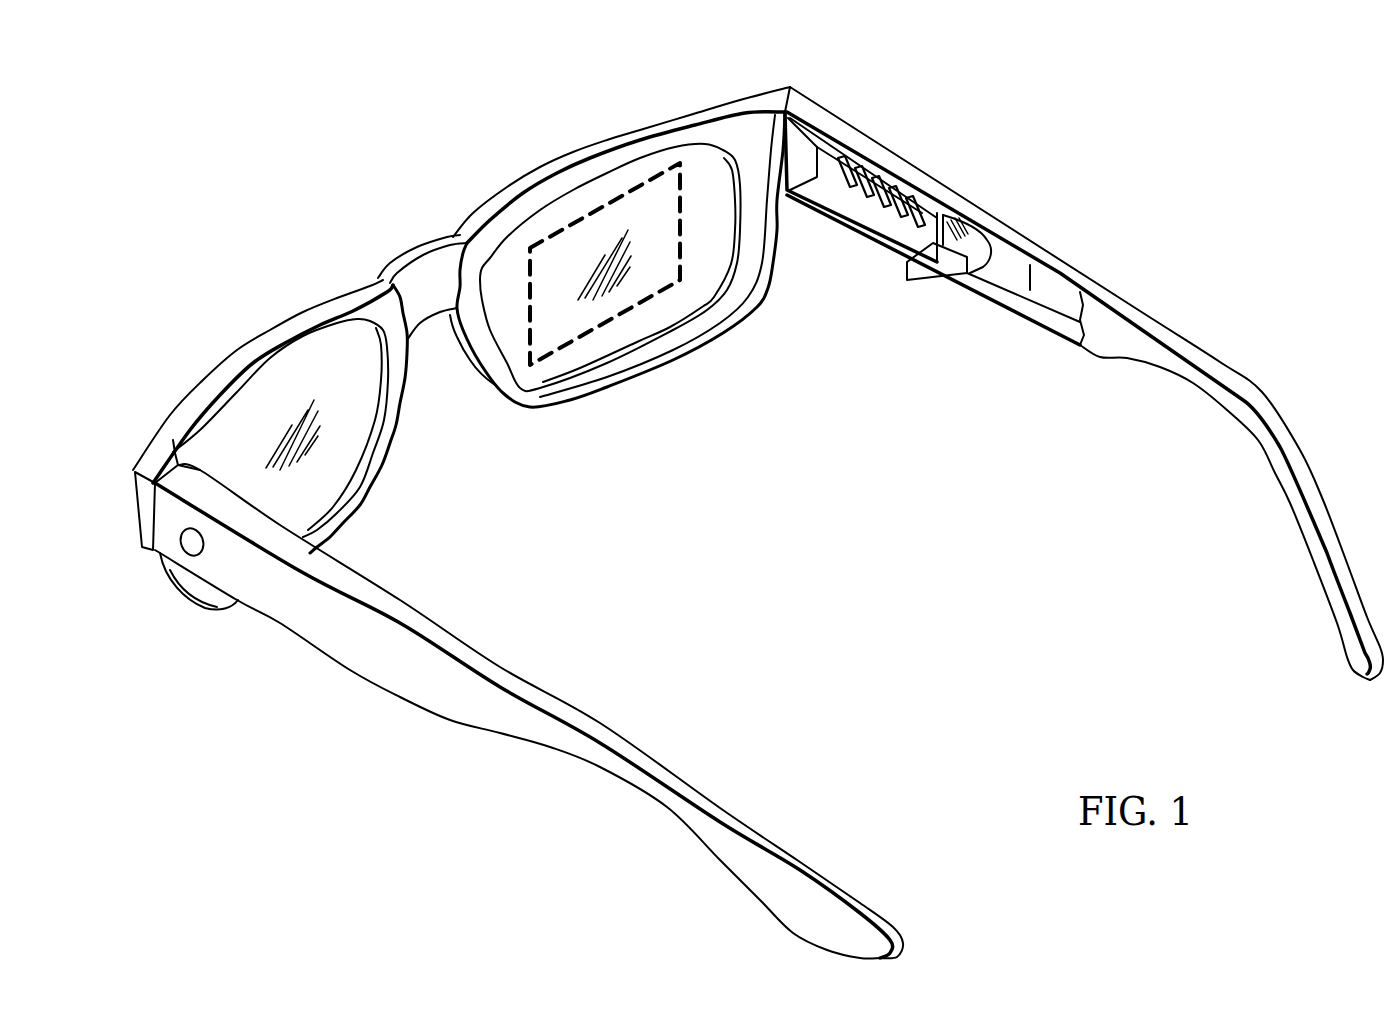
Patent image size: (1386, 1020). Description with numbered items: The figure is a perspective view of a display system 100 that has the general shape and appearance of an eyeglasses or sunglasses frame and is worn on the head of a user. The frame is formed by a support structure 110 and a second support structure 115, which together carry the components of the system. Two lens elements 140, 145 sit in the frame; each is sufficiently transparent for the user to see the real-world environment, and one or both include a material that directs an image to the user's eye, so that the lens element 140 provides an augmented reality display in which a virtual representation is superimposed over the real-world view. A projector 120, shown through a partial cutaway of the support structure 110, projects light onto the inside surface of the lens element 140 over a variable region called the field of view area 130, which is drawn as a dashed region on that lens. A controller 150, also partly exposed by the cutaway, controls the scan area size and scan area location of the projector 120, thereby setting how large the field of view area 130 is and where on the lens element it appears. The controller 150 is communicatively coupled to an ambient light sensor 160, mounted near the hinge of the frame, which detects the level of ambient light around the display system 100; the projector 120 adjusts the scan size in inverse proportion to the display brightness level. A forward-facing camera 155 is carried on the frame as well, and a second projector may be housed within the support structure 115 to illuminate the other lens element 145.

The display system 100 is at (384, 97).
The support structure 110 is at (973, 213).
The support structure 115 is at (283, 617).
The projector 120 is at (915, 185).
The field of view area 130 is at (575, 212).
The lens element 140 is at (627, 333).
The lens element 145 is at (273, 378).
The controller 150 is at (930, 268).
The forward-facing camera 155 is at (567, 150).
The ambient light sensor 160 is at (187, 540).